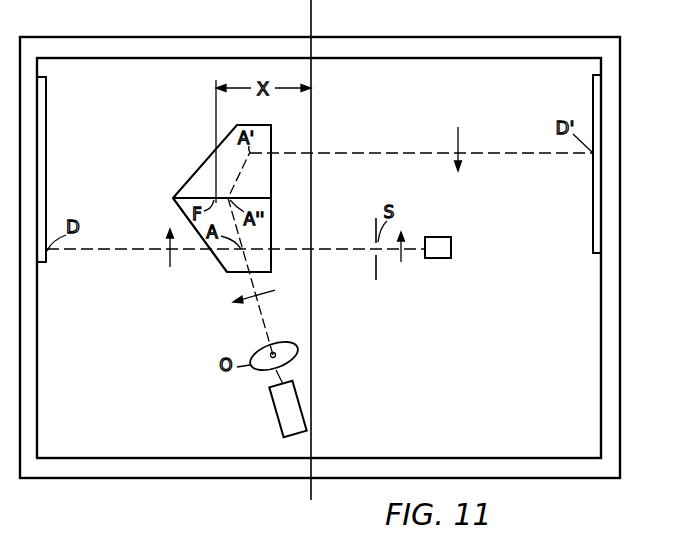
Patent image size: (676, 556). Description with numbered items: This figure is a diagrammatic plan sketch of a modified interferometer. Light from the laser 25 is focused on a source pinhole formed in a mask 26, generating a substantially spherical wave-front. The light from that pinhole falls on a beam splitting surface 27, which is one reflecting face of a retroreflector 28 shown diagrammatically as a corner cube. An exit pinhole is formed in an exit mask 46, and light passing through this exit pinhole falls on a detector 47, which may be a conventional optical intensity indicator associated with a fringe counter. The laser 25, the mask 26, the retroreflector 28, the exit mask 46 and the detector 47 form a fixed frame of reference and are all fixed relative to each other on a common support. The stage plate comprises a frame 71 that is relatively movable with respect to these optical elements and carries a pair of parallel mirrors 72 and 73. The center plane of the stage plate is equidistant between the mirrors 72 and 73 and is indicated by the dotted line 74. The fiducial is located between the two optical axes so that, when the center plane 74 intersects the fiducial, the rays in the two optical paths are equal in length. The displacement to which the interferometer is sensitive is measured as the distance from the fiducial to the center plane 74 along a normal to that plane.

The frame 71 is at (531, 37).
The mirror 72 is at (46, 113).
The mirror 73 is at (593, 200).
The center plane 74 is at (312, 121).
The retroreflector 28 is at (186, 167).
The beam splitting surface 27 is at (231, 261).
The mask 26 is at (377, 264).
The laser 25 is at (437, 258).
The exit mask 46 is at (298, 350).
The detector 47 is at (281, 412).